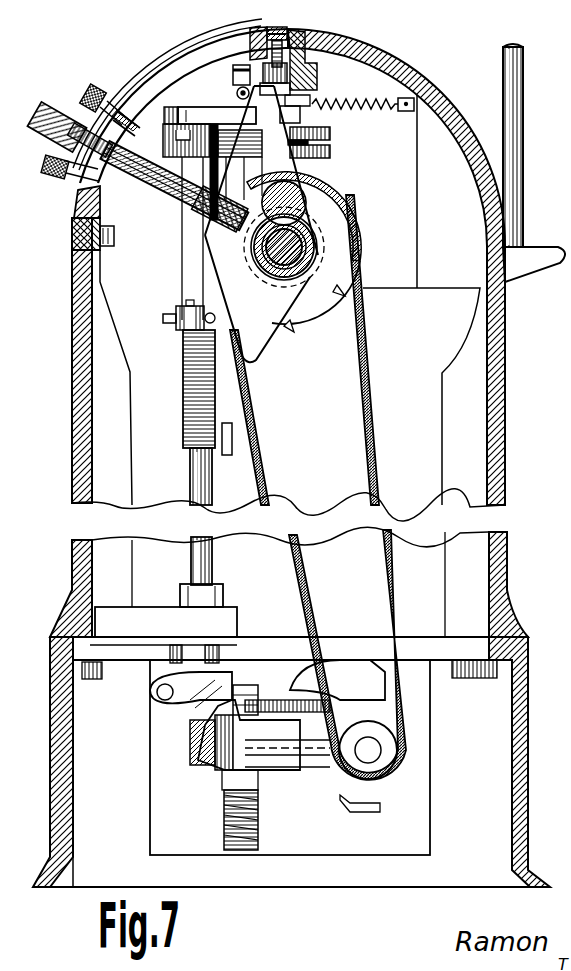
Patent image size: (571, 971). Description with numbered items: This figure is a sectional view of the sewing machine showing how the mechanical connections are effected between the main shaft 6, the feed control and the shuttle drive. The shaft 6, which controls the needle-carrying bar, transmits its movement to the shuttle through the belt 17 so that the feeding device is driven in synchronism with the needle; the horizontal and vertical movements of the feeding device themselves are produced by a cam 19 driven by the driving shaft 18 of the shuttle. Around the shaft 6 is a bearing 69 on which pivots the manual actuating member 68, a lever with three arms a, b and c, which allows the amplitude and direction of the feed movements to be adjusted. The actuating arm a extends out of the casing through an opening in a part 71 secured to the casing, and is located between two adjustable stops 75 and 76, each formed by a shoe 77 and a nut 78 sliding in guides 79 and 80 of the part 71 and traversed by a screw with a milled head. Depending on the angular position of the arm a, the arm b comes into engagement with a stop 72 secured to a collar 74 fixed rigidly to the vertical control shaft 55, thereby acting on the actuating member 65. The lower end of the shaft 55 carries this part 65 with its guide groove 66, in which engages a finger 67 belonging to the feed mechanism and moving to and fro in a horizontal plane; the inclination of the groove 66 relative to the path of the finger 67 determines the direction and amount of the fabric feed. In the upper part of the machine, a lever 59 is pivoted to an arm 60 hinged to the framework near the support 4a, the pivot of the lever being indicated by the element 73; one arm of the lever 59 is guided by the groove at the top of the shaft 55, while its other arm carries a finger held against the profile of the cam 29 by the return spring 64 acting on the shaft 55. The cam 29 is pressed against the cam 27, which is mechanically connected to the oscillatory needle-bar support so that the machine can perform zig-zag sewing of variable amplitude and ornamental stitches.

The support part 4a is at (72, 236).
The part secured to the casing 71 is at (76, 206).
The guide 79 is at (173, 63).
The arm of the actuating lever c is at (261, 170).
The arm 60 is at (233, 76).
The pivot pin 73 is at (237, 94).
The lever 59 is at (200, 116).
The guide 80 is at (166, 112).
The nut 78 is at (160, 134).
The actuating arm a is at (165, 196).
The adjustable stop 76 is at (90, 88).
The shoe 77 is at (120, 112).
The adjustable stop 75 is at (43, 167).
The shaft 6 is at (283, 226).
The bearing 69 is at (308, 277).
The manual actuating member 68 is at (323, 238).
The arm of the actuating lever b is at (257, 298).
The stop 72 is at (200, 306).
The collar 74 is at (172, 330).
The return spring 64 is at (183, 390).
The control shaft 55 is at (190, 478).
The belt 17 is at (360, 382).
The cam 29 is at (330, 134).
The cam 27 is at (330, 152).
The actuating member 65 is at (176, 645).
The guide groove 66 is at (212, 645).
The finger 67 is at (200, 680).
The cam 19 is at (222, 790).
The driving shaft of the shuttle 18 is at (347, 671).